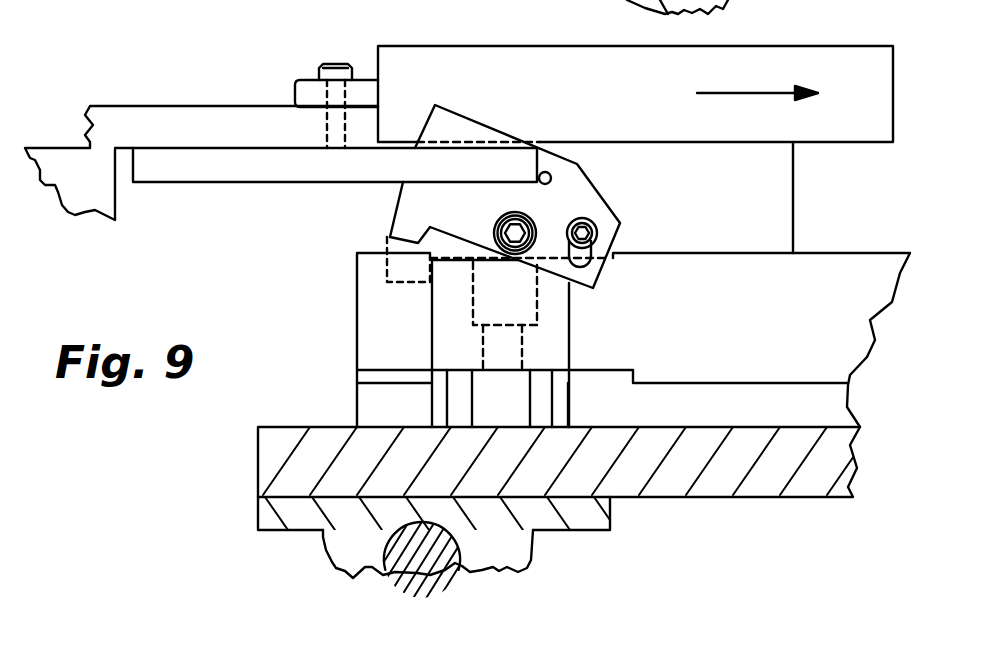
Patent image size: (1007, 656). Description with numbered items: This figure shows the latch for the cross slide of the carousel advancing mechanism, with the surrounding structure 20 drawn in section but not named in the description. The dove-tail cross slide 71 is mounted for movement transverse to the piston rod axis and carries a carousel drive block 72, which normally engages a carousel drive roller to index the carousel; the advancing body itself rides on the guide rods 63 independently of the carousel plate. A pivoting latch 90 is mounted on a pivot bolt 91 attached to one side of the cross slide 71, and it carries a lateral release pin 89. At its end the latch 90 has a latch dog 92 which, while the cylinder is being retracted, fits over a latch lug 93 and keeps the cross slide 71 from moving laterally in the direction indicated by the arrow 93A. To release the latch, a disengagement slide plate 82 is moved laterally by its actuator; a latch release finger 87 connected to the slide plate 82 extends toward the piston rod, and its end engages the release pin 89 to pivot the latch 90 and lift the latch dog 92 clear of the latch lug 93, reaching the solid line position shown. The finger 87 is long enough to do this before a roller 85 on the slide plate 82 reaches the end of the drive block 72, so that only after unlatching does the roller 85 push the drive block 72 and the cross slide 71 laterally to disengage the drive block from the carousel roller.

The base block 20 is at (768, 283).
The guide rods 63 is at (430, 549).
The cross slide 71 is at (776, 173).
The carousel drive block 72 is at (490, 55).
The slide plate 82 is at (172, 120).
The roller 85 is at (307, 88).
The latch release finger 87 is at (477, 167).
The lateral release pin 89 is at (552, 178).
The pivoting latch 90 is at (573, 204).
The pivot bolt 91 is at (508, 230).
The latch dog 92 is at (387, 284).
The latch lug 93 is at (555, 312).
The arrow 93A is at (735, 90).